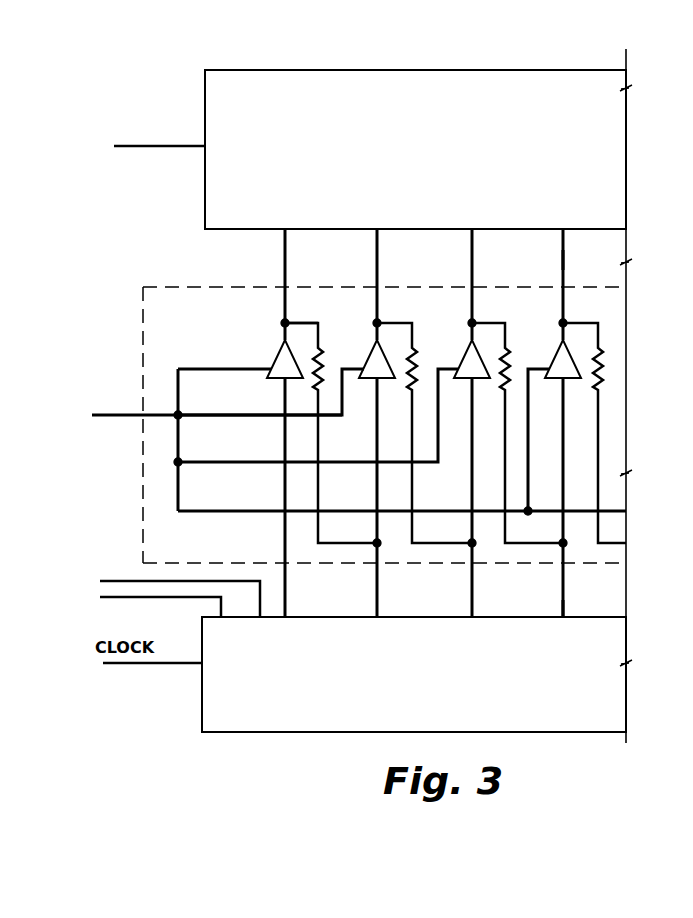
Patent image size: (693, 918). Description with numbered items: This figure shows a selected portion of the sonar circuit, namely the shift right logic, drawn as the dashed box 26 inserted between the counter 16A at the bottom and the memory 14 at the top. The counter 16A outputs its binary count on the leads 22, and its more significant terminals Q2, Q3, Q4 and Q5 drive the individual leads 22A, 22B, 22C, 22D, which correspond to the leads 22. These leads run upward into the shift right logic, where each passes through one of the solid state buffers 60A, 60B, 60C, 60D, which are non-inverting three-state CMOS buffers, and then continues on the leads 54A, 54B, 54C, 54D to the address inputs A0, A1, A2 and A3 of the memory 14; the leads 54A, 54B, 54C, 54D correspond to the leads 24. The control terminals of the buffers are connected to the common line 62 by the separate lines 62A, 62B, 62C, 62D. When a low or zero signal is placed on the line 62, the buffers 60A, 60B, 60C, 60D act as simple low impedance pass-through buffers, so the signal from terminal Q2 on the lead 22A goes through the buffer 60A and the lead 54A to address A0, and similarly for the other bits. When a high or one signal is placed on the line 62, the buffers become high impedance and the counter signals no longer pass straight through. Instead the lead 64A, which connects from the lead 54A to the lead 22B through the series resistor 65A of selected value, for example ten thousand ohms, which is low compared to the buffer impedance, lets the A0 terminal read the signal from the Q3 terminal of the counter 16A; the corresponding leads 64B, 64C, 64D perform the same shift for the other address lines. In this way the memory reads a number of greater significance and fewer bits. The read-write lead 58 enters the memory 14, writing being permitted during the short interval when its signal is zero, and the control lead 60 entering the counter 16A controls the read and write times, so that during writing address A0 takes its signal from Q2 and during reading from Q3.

The memory 14 is at (284, 69).
The read-write lead 58 is at (151, 146).
The control lead 60 is at (113, 581).
The counter 16A is at (290, 732).
The shift right logic box 26 is at (154, 286).
The lead 54A is at (284, 271).
The lead 54B is at (376, 271).
The lead 54C is at (471, 271).
The lead 54D is at (562, 271).
The leads 24 is at (565, 259).
The solid state buffer 60A is at (276, 363).
The solid state buffer 60B is at (366, 363).
The solid state buffer 60C is at (458, 362).
The solid state buffer 60D is at (550, 362).
The lead 64A is at (316, 305).
The lead 64B is at (411, 301).
The lead 64C is at (505, 301).
The lead 64D is at (573, 321).
The series resistor 65A is at (316, 356).
The lead 22A is at (283, 548).
The lead 22B is at (376, 593).
The lead 22C is at (470, 593).
The lead 22D is at (563, 593).
The leads 22 is at (565, 588).
The line 62 is at (112, 413).
The line 62A is at (200, 368).
The line 62B is at (236, 413).
The line 62C is at (236, 458).
The line 62D is at (241, 509).